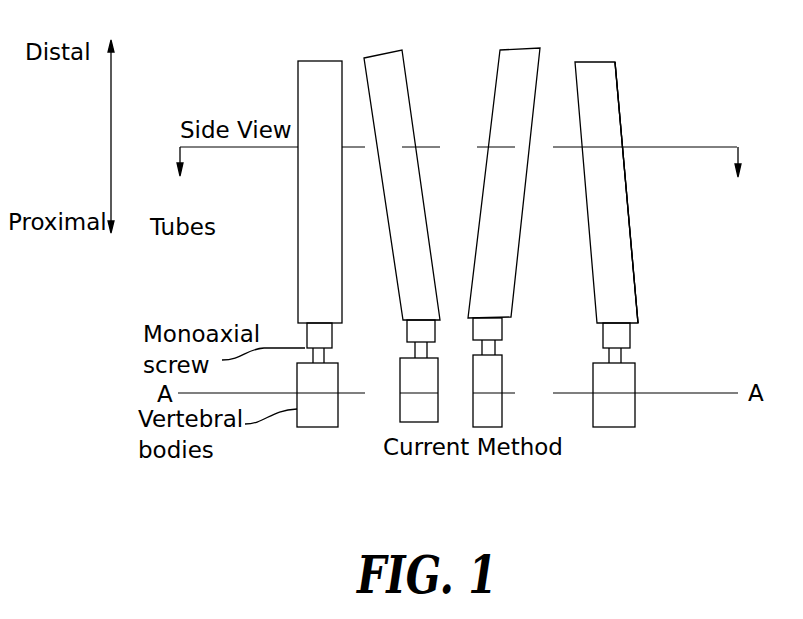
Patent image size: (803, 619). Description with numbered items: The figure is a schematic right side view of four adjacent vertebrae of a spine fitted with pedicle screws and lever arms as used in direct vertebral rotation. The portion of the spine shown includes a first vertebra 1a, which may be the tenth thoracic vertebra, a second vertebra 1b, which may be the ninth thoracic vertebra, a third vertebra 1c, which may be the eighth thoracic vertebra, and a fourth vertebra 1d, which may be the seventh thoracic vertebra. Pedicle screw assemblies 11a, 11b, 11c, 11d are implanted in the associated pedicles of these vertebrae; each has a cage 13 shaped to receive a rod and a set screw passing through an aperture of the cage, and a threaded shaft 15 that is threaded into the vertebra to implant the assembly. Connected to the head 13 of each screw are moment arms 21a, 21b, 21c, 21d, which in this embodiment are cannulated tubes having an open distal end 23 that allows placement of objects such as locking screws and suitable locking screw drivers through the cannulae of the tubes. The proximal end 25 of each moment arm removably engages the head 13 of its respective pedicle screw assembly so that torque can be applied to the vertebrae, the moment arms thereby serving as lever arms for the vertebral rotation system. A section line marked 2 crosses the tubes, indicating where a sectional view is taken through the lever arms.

The section line 2- 2 is at (459, 178).
The moment arm 21a is at (298, 87).
The moment arm 21b is at (365, 70).
The moment arm 21c is at (497, 67).
The moment arm 21d is at (575, 78).
The open distal end 23 is at (620, 88).
The proximal end 25 is at (637, 307).
The pedicle screw assembly 11a is at (306, 335).
The pedicle screw assembly 11b is at (407, 331).
The pedicle screw assembly 11c is at (502, 328).
The pedicle screw assembly 11d is at (618, 354).
The cage 13 is at (630, 337).
The threaded shaft 15 is at (621, 355).
The first vertebra 1a is at (310, 428).
The second vertebra 1b is at (407, 423).
The third vertebra 1c is at (487, 428).
The fourth vertebra 1d is at (613, 427).